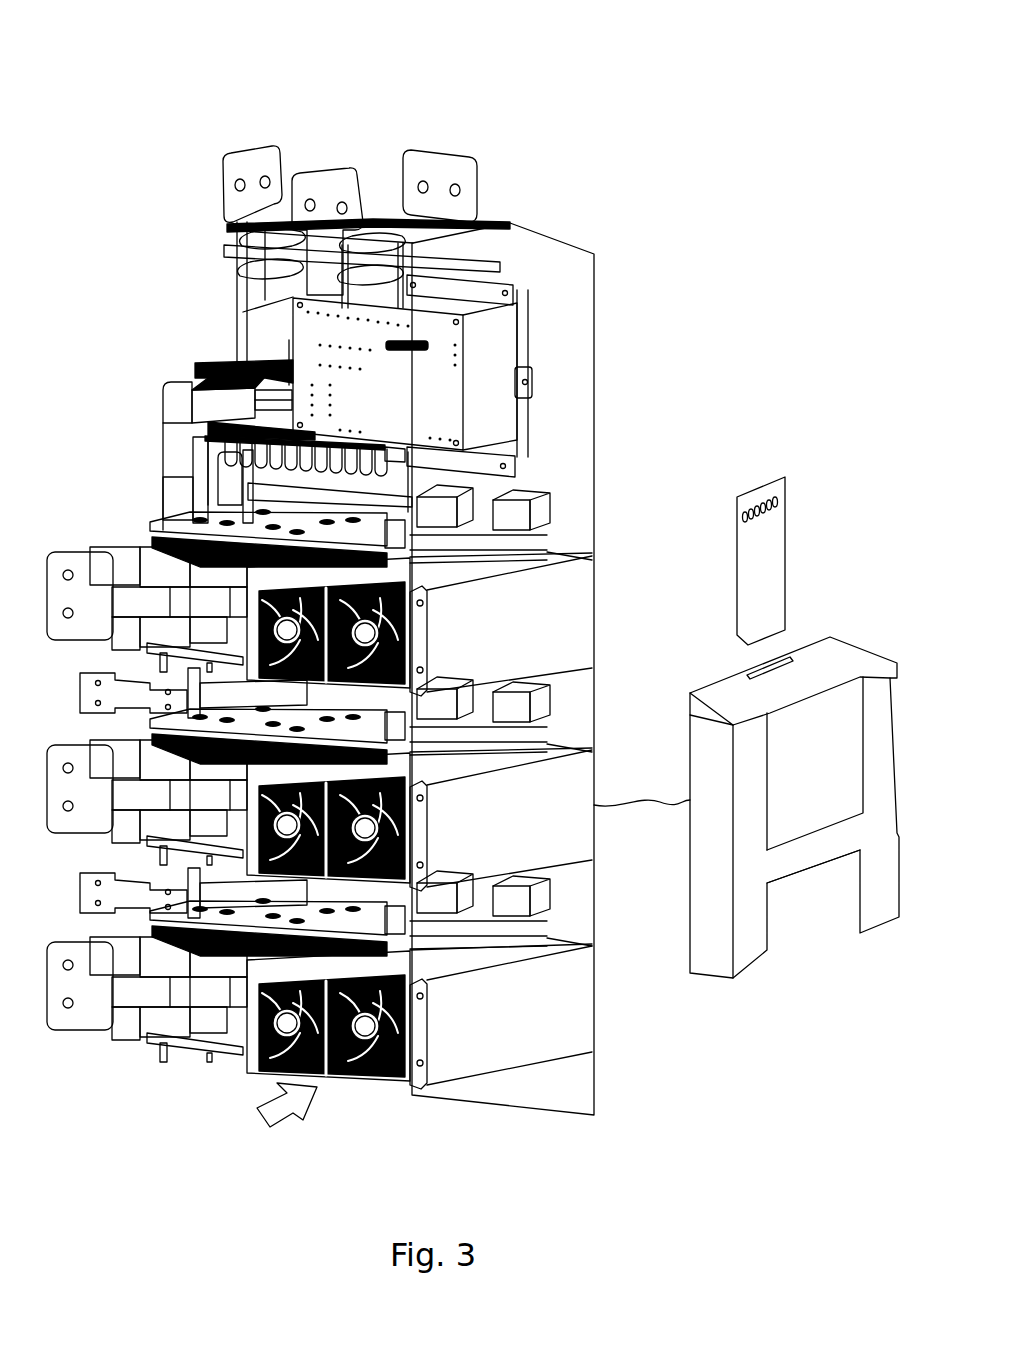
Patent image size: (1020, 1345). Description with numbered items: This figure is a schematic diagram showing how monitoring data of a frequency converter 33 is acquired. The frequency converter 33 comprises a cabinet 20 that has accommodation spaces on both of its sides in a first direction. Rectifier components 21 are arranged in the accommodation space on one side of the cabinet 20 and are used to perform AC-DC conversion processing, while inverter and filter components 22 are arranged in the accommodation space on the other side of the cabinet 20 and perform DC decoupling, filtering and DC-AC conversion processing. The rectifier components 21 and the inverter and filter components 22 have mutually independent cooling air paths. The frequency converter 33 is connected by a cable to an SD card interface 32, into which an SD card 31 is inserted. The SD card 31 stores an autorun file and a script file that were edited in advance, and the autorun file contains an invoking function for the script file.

The cabinet 20 is at (153, 1057).
The rectifier components 21 is at (374, 207).
The inverter and filter components 22 is at (427, 1033).
The SD card 31 is at (770, 457).
The SD card interface 32 is at (813, 933).
The frequency converter 33 is at (465, 118).